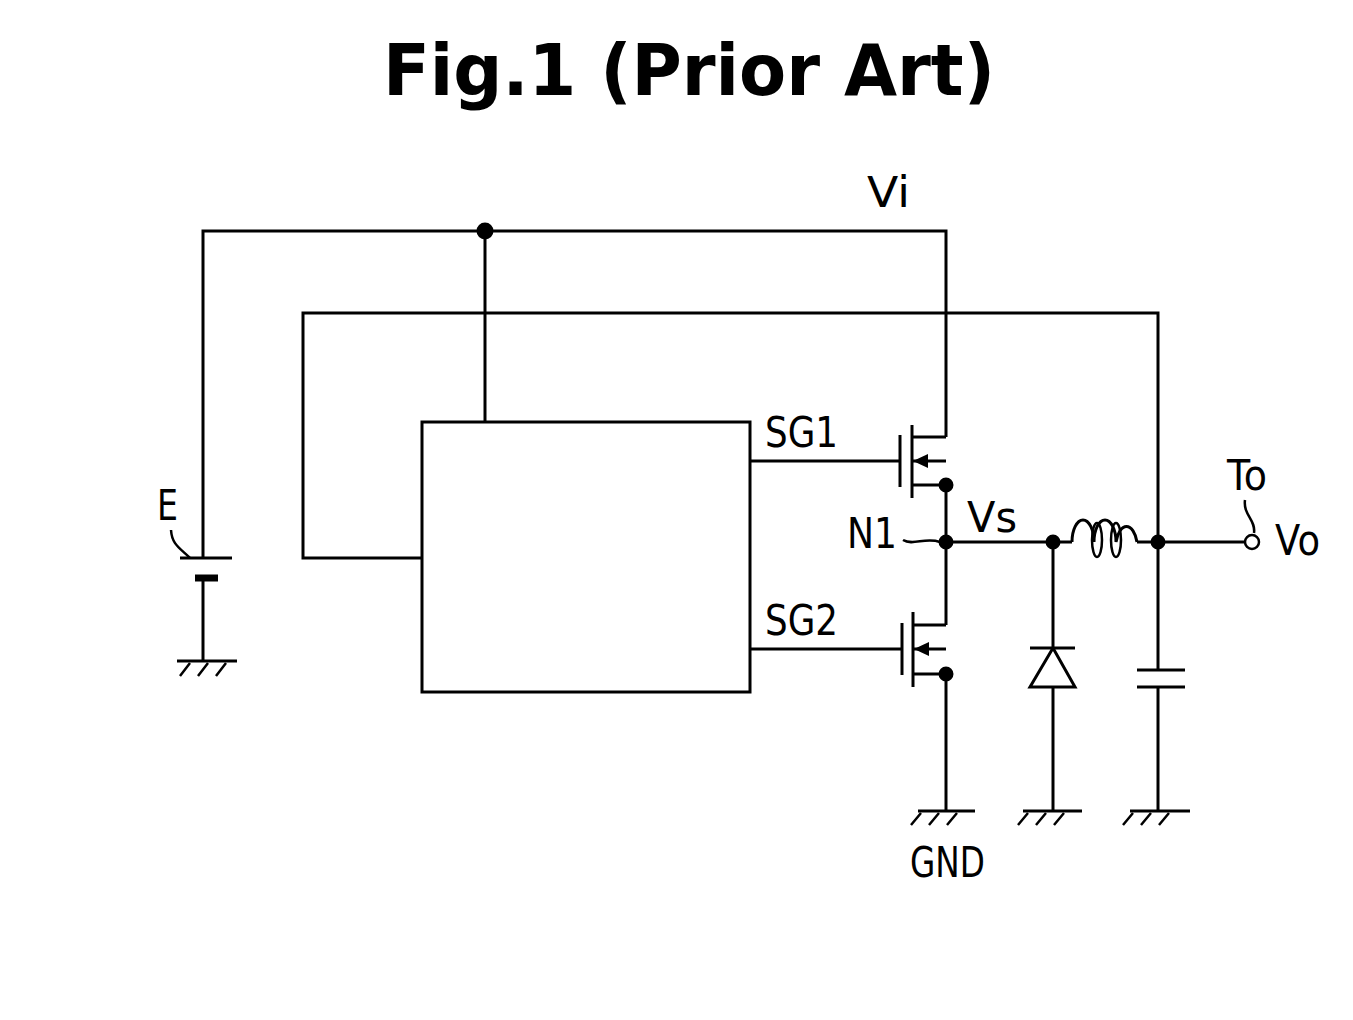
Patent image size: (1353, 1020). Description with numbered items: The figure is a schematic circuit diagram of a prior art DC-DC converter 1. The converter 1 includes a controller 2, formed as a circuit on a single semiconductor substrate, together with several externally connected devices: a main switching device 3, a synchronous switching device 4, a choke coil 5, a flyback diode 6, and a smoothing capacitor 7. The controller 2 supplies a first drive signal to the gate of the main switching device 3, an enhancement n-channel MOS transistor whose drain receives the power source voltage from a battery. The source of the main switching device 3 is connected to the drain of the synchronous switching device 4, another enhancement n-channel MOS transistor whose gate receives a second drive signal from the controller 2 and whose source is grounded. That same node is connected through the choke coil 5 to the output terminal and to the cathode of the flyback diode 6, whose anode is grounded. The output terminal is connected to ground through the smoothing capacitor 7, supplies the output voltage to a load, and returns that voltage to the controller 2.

The DC-DC converter 1 is at (1098, 252).
The controller 2 is at (618, 422).
The main switching device 3 is at (900, 447).
The synchronous switching device 4 is at (902, 640).
The choke coil 5 is at (1090, 520).
The flyback diode 6 is at (1065, 645).
The smoothing capacitor 7 is at (1170, 668).